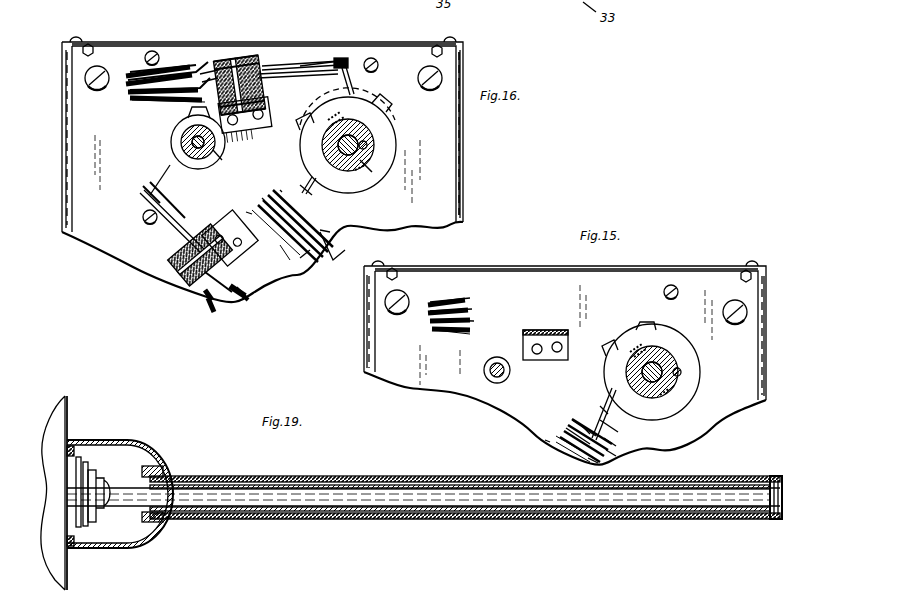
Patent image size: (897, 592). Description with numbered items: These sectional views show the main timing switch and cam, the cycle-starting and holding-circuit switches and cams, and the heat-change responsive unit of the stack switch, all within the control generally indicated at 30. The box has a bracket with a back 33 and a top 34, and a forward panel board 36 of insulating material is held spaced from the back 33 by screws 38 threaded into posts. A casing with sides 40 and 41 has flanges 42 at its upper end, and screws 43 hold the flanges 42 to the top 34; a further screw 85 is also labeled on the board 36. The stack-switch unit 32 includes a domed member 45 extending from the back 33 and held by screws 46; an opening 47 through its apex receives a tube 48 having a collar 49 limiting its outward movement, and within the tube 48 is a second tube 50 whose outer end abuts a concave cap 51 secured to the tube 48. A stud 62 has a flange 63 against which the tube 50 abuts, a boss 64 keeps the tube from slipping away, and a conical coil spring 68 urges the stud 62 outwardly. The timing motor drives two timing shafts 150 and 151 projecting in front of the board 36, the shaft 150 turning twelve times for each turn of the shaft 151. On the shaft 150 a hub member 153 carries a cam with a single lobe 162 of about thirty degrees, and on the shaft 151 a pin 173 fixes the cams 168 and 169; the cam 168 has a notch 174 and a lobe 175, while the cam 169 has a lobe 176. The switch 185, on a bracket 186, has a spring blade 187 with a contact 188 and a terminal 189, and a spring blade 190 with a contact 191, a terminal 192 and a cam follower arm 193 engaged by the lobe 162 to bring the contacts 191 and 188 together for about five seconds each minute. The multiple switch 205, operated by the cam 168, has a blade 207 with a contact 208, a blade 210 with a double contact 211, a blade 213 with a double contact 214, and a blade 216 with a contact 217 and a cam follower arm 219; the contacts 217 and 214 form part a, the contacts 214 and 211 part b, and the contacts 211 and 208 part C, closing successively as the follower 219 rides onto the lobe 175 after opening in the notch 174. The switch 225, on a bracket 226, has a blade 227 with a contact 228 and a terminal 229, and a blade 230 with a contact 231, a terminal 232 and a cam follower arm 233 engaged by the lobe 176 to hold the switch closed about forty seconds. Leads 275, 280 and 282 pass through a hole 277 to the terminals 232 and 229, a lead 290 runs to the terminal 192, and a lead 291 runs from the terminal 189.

In FIG. 16, the switch assembly 30 is at (484, 187).
In FIG. 19, the shaft tube assembly 32 is at (336, 533).
In FIG. 16, the back 33 is at (63, 128).
In FIG. 15, the back 33 is at (364, 356).
In FIG. 19, the back 33 is at (70, 398).
In FIG. 16, the top 34 is at (113, 42).
In FIG. 15, the top 34 is at (716, 267).
In FIG. 16, the forward panel board 36 is at (283, 42).
In FIG. 15, the forward panel board 36 is at (522, 272).
In FIG. 16, the screws 38 is at (85, 78).
In FIG. 15, the screws 38 is at (385, 302).
In FIG. 16, the side 40 is at (64, 190).
In FIG. 15, the side 40 is at (365, 332).
In FIG. 16, the side 41 is at (463, 165).
In FIG. 15, the side 41 is at (766, 356).
In FIG. 19, the side 41 is at (62, 412).
In FIG. 16, the flanges 42 is at (94, 50).
In FIG. 15, the flanges 42 is at (398, 272).
In FIG. 16, the screws 43 is at (75, 40).
In FIG. 15, the screws 43 is at (376, 264).
In FIG. 19, the domed member 45 is at (108, 440).
In FIG. 19, the screws 46 is at (72, 446).
In FIG. 19, the opening 47 is at (160, 477).
In FIG. 19, the tube 48 is at (205, 476).
In FIG. 19, the collar 49 is at (158, 466).
In FIG. 19, the second tube 50 is at (352, 485).
In FIG. 19, the concave cap 51 is at (783, 480).
In FIG. 19, the stud 62 is at (77, 508).
In FIG. 19, the flange 63 is at (86, 480).
In FIG. 19, the boss 64 is at (108, 505).
In FIG. 19, the conical coil spring 68 is at (90, 470).
In FIG. 16, the screw 85 is at (151, 33).
In FIG. 16, the timing shaft 150 is at (180, 143).
In FIG. 15, the timing shaft 150 is at (492, 382).
In FIG. 16, the timing shaft 151 is at (376, 172).
In FIG. 16, the hub member 153 is at (218, 152).
In FIG. 16, the lobe 162 is at (190, 112).
In FIG. 15, the cam 168 is at (698, 382).
In FIG. 16, the cam 169 is at (392, 155).
In FIG. 16, the pin 173 is at (368, 146).
In FIG. 15, the pin 173 is at (682, 370).
In FIG. 16, the notch 174 is at (395, 118).
In FIG. 15, the notch 174 is at (640, 333).
In FIG. 16, the lobe 175 is at (302, 128).
In FIG. 15, the lobe 175 is at (606, 340).
In FIG. 16, the lobe 176 is at (390, 104).
In FIG. 16, the switch 185 is at (200, 219).
In FIG. 16, the bracket 186 is at (230, 218).
In FIG. 16, the spring blade 187 is at (172, 232).
In FIG. 16, the contact 188 is at (145, 200).
In FIG. 16, the terminal 189 is at (206, 300).
In FIG. 16, the spring blade 190 is at (137, 217).
In FIG. 16, the contact 191 is at (160, 192).
In FIG. 16, the terminal 192 is at (228, 258).
In FIG. 16, the cam follower arm 193 is at (158, 175).
In FIG. 16, the multiple switch 205 is at (276, 232).
In FIG. 15, the multiple switch 205 is at (565, 452).
In FIG. 16, the blade 207 is at (300, 248).
In FIG. 15, the blade 207 is at (560, 445).
In FIG. 16, the contact 208 is at (270, 208).
In FIG. 15, the contact 208 is at (575, 460).
In FIG. 16, the blade 210 is at (322, 240).
In FIG. 15, the blade 210 is at (594, 460).
In FIG. 15, the double contact 211 is at (578, 430).
In FIG. 16, the blade 213 is at (341, 246).
In FIG. 15, the blade 213 is at (618, 455).
In FIG. 15, the double contact 214 is at (600, 414).
In FIG. 16, the blade 216 is at (322, 222).
In FIG. 15, the blade 216 is at (622, 444).
In FIG. 16, the contact 217 is at (300, 196).
In FIG. 15, the contact 217 is at (622, 424).
In FIG. 16, the cam follower arm 219 is at (305, 175).
In FIG. 15, the cam follower arm 219 is at (612, 392).
In FIG. 16, the switch 225 is at (292, 66).
In FIG. 16, the bracket 226 is at (268, 118).
In FIG. 15, the bracket 226 is at (542, 362).
In FIG. 16, the switch blade 227 is at (322, 60).
In FIG. 16, the contact 228 is at (350, 62).
In FIG. 16, the terminal 229 is at (240, 57).
In FIG. 16, the switch blade 230 is at (290, 72).
In FIG. 16, the contact 231 is at (378, 64).
In FIG. 16, the terminal 232 is at (205, 88).
In FIG. 16, the cam follower arm 233 is at (352, 88).
In FIG. 16, the branch 275 is at (205, 75).
In FIG. 15, the branch 275 is at (472, 328).
In FIG. 16, the hole 277 is at (135, 88).
In FIG. 15, the hole 277 is at (432, 326).
In FIG. 16, the branch 280 is at (145, 64).
In FIG. 15, the branch 280 is at (472, 316).
In FIG. 16, the lead 282 is at (178, 62).
In FIG. 15, the lead 282 is at (470, 304).
In FIG. 16, the lead 290 is at (244, 298).
In FIG. 16, the lead 291 is at (132, 96).
In FIG. 15, the lead 291 is at (458, 340).
In FIG. 16, the part a of switch a is at (280, 190).
In FIG. 15, the part a of switch a is at (601, 403).
In FIG. 16, the part b of switch b is at (262, 198).
In FIG. 15, the part b of switch b is at (582, 422).
In FIG. 16, the part c of switch C is at (244, 209).
In FIG. 15, the part c of switch C is at (545, 440).